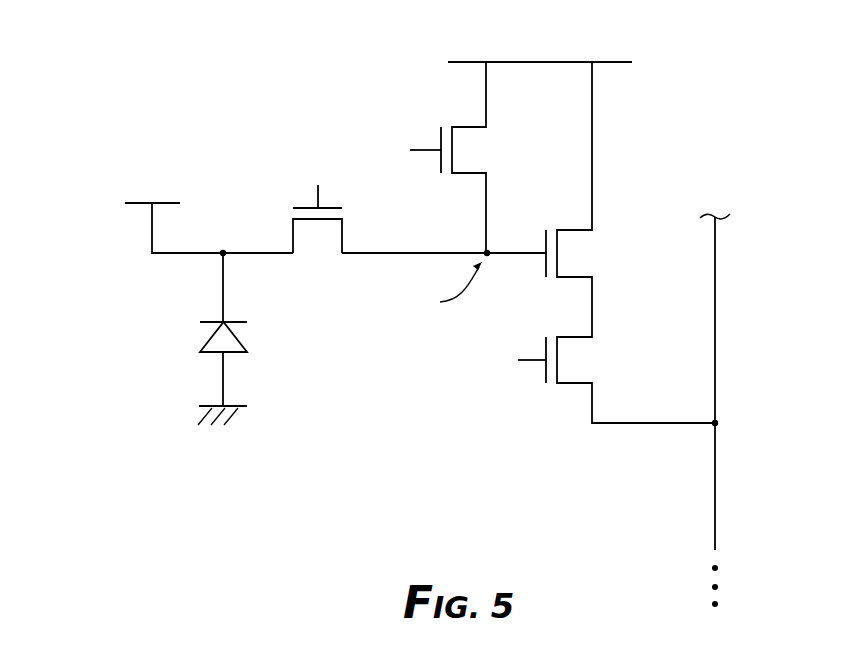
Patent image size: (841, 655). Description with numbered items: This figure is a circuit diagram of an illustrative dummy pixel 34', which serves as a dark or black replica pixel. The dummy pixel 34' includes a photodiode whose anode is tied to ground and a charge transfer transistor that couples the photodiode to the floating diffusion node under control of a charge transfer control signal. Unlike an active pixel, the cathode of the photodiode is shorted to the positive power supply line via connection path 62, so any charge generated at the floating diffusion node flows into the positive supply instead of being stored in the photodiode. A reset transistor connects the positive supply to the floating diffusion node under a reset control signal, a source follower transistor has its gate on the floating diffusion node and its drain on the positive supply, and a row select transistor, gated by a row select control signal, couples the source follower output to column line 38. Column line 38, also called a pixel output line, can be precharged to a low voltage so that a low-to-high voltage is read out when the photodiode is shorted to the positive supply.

The dummy pixel 34' is at (379, 226).
The connection path 62 is at (151, 232).
The column line 38 is at (715, 325).